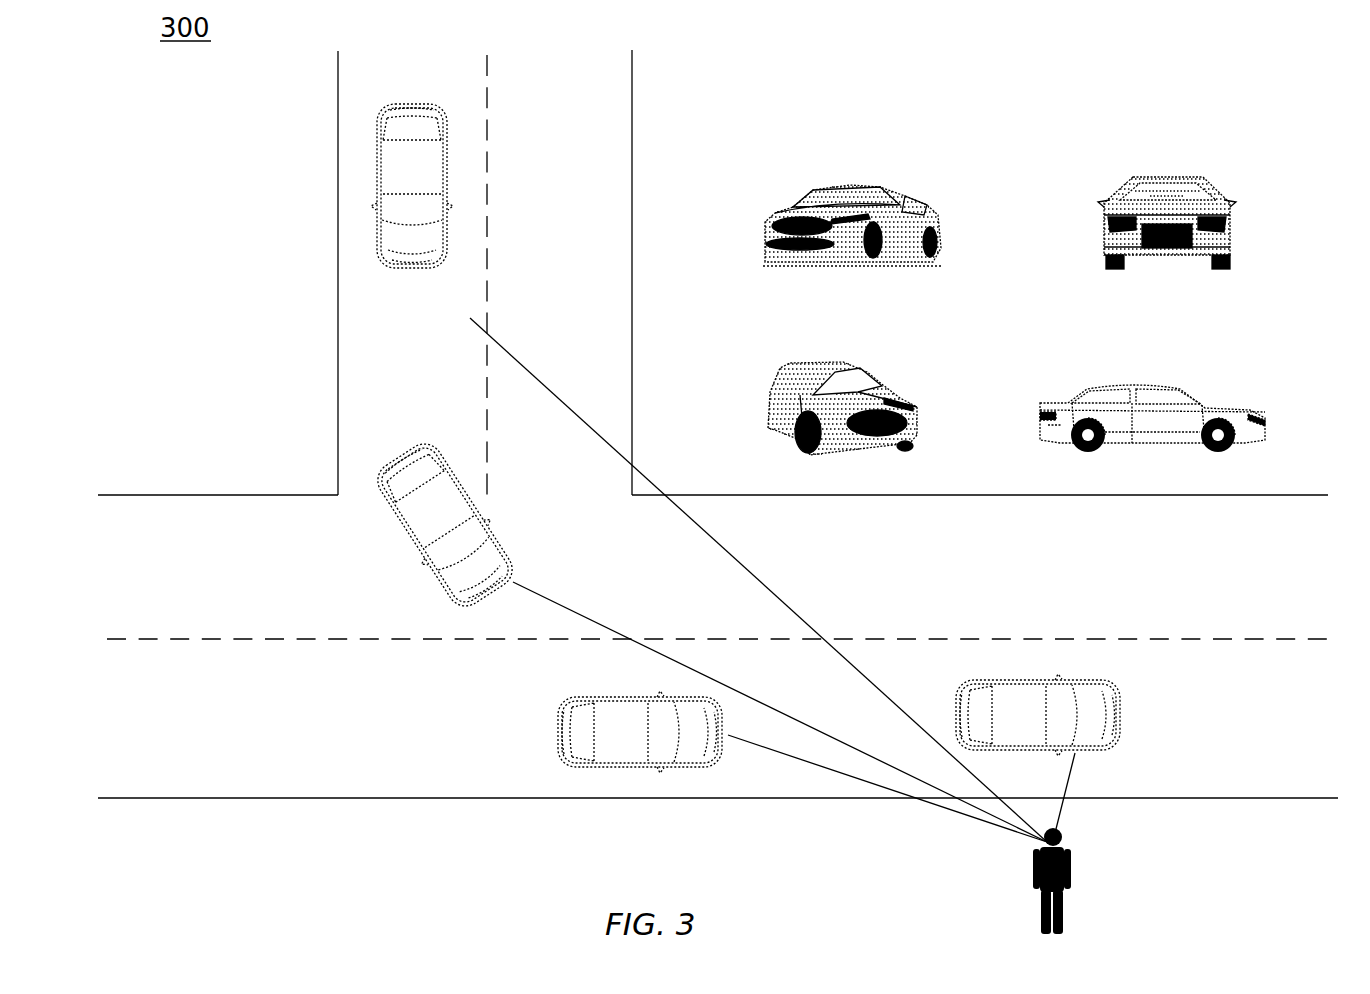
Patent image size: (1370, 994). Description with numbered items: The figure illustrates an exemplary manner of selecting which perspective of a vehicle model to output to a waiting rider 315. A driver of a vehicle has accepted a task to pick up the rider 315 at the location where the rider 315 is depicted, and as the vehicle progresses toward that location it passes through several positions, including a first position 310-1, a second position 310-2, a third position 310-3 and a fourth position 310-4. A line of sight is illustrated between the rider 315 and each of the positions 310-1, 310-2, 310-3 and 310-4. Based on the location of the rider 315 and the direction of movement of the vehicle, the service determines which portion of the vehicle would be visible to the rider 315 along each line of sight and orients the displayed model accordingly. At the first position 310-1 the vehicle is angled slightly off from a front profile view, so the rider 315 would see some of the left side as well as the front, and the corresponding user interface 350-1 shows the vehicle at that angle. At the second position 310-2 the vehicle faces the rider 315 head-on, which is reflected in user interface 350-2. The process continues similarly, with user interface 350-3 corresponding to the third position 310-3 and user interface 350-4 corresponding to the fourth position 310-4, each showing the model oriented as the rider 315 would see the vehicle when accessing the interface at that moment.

The position 310-1 is at (378, 192).
The position 310-2 is at (375, 514).
The position 310-3 is at (657, 770).
The position 310-4 is at (1003, 677).
The rider 315 is at (1022, 898).
The user interface 350-1 is at (760, 227).
The user interface 350-2 is at (1098, 235).
The user interface 350-3 is at (762, 392).
The user interface 350-4 is at (1083, 390).